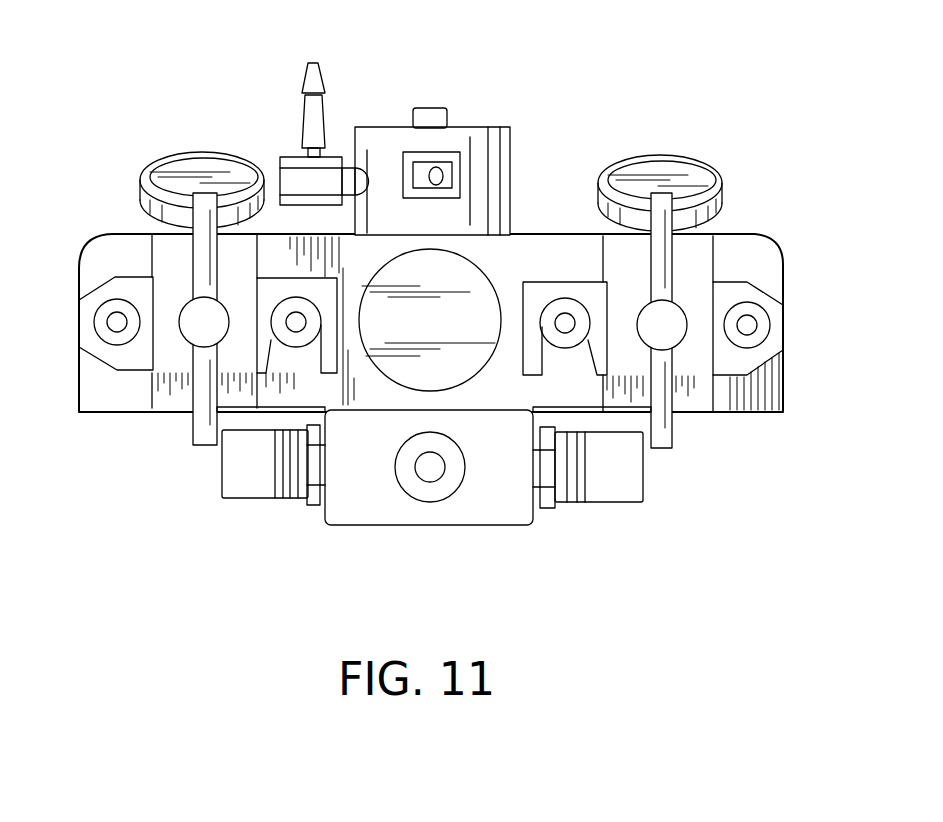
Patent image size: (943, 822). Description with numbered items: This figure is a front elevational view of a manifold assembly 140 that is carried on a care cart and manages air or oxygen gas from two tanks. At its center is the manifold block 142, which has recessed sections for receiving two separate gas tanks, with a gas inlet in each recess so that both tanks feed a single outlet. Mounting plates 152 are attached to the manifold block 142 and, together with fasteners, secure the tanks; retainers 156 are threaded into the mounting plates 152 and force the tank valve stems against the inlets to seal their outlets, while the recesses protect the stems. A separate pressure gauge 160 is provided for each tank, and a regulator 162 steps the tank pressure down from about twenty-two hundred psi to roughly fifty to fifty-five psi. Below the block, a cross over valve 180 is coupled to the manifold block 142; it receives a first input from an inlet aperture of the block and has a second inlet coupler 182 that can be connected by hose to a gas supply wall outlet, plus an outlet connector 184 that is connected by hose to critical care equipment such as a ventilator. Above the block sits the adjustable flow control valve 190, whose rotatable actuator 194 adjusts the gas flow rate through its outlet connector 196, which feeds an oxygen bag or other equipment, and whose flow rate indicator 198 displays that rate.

The manifold assembly 140 is at (446, 306).
The manifold block 142 is at (88, 262).
The mounting plates 152 is at (132, 358).
The retainers 156 is at (202, 435).
The pressure gauges 160 is at (180, 172).
The regulator 162 is at (449, 302).
The cross over valve 180 is at (367, 507).
The second inlet coupler 182 is at (620, 483).
The outlet connector 184 is at (245, 487).
The adjustable flow control valve 190 is at (470, 121).
The rotatable actuator 194 is at (433, 118).
The outlet connector 196 is at (315, 78).
The flow rate indicator 198 is at (419, 192).